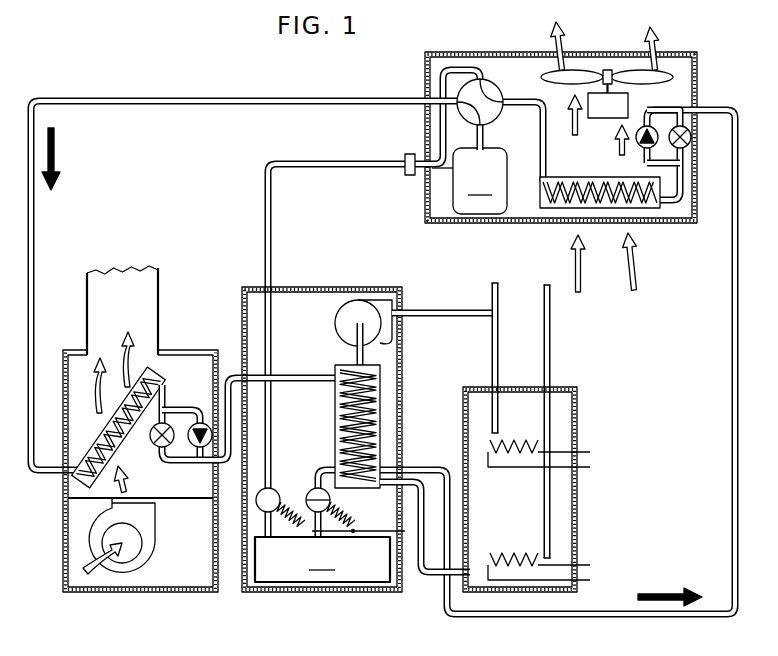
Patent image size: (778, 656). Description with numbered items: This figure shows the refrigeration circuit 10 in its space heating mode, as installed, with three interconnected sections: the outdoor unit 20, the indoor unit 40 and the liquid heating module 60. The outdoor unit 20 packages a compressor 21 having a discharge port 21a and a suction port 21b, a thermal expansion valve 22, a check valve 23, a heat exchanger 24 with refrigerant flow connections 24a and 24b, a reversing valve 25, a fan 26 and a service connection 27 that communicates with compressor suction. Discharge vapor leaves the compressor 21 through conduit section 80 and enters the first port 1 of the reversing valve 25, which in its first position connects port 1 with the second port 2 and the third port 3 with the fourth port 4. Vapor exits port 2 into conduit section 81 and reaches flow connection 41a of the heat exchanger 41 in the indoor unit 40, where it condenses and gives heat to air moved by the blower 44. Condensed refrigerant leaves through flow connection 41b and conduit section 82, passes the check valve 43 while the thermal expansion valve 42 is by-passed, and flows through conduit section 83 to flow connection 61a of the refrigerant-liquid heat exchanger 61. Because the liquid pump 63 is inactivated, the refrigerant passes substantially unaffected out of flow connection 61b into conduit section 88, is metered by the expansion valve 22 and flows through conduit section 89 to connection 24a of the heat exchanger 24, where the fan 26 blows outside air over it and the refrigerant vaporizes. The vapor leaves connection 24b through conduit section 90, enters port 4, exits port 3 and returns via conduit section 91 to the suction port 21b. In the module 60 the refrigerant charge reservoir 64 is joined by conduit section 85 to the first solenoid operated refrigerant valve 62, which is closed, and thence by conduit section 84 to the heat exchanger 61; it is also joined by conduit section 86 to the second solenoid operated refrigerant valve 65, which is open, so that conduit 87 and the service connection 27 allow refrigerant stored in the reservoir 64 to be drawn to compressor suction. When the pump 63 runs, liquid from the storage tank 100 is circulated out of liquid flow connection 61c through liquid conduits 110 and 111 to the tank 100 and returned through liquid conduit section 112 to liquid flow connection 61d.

The first port 1 is at (467, 135).
The second port 2 is at (451, 119).
The third port 3 is at (489, 74).
The fourth port 4 is at (508, 91).
The refrigeration circuit 10 is at (250, 606).
The outdoor unit 20 is at (698, 66).
The compressor 21 is at (480, 181).
The discharge port 21a is at (494, 150).
The suction port 21b is at (436, 168).
The thermal expansion valve 22 is at (692, 137).
The check valve 23 is at (640, 145).
The heat exchanger 24 is at (600, 210).
The refrigerant flow connection 24a is at (655, 210).
The refrigerant flow connection 24b is at (545, 195).
The reversing valve 25 is at (500, 88).
The fan 26 is at (630, 72).
The service connection 27 is at (409, 154).
The indoor unit 40 is at (63, 558).
The heat exchanger 41 is at (85, 478).
The refrigerant flow connection 41a is at (72, 482).
The flow connection 41b is at (168, 372).
The thermal expansion valve 42 is at (155, 444).
The check valve 43 is at (195, 456).
The blower 44 is at (120, 578).
The liquid heating module 60 is at (345, 594).
The refrigerant-liquid heat exchanger 61 is at (334, 420).
The refrigerant flow connection 61a is at (330, 374).
The refrigerant flow connection 61b is at (386, 468).
The liquid flow connection 61c is at (334, 390).
The liquid flow connection 61d is at (356, 531).
The first solenoid operated refrigerant valve 62 is at (348, 510).
The liquid pump 63 is at (370, 298).
The refrigerant charge reservoir 64 is at (322, 559).
The second solenoid operated refrigerant valve 65 is at (276, 489).
The refrigerant conduit section 80 is at (502, 112).
The conduit section 81 is at (190, 96).
The conduit section 82 is at (166, 398).
The conduit section 83 is at (230, 374).
The conduit section 84 is at (318, 468).
The refrigerant conduit section 85 is at (309, 493).
The refrigerant conduit section 86 is at (240, 545).
The refrigerant conduit 87 is at (264, 216).
The refrigerant conduit section 88 is at (731, 477).
The refrigerant conduit section 89 is at (686, 194).
The refrigerant conduit section 90 is at (548, 130).
The refrigerant conduit section 91 is at (449, 62).
The storage tank 100 is at (580, 393).
The liquid conduit 110 is at (354, 348).
The liquid conduit 111 is at (442, 311).
The liquid conduit section 112 is at (424, 586).